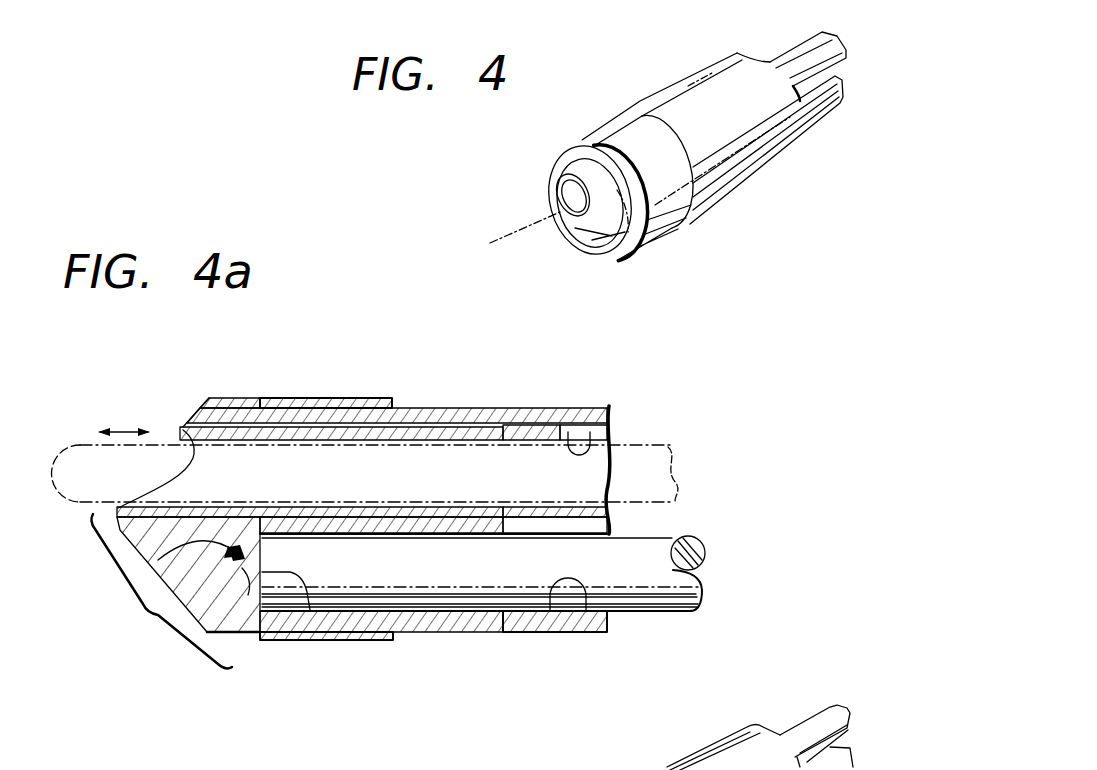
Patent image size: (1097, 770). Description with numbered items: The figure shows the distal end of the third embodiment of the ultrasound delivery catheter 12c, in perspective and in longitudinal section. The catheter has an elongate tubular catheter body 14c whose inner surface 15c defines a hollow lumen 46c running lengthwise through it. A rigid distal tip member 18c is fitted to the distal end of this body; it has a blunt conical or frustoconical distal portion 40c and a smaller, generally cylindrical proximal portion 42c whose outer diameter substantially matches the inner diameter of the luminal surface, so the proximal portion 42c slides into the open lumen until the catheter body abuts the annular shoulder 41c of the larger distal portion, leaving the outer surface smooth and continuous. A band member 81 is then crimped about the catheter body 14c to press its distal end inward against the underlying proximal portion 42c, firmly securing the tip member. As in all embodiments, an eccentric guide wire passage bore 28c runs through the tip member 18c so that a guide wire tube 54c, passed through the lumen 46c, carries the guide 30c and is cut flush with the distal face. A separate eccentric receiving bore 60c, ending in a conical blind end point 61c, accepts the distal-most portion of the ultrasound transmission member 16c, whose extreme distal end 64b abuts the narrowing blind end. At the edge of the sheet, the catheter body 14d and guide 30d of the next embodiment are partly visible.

In FIG. 4, the catheter 12c is at (715, 222).
In FIG. 4, the elongate tubular catheter body 14c is at (699, 100).
In FIG. 4a, the elongate tubular catheter body 14c is at (402, 408).
In FIG. 4, the band member 81 is at (631, 140).
In FIG. 4a, the band member 81 is at (349, 397).
In FIG. 4, the distal tip member 18c is at (558, 172).
In FIG. 4a, the distal tip member 18c is at (233, 397).
In FIG. 4, the front end face 28c is at (540, 215).
In FIG. 4a, the front end face 28c is at (165, 434).
In FIG. 4, the central bore 54c is at (562, 225).
In FIG. 4a, the central bore 54c is at (244, 508).
In FIG. 4, the optical fiber cable 30c is at (803, 57).
In FIG. 4a, the optical fiber cable 30c is at (73, 463).
In FIG. 4, the strain relief cable 16c is at (817, 97).
In FIG. 4a, the strain relief cable 16c is at (706, 553).
In FIG. 4a, the rotation direction arrow 41c is at (250, 417).
In FIG. 4a, the proximal portion 42c is at (444, 420).
In FIG. 4a, the inner surface 15c is at (593, 426).
In FIG. 4a, the lumen 46c is at (613, 427).
In FIG. 4a, the flared entrance surface 61c is at (200, 538).
In FIG. 4a, the distal portion 40c is at (146, 614).
In FIG. 4a, the hook 60c is at (248, 595).
In FIG. 4a, the bracket 64b is at (310, 610).
In FIG. 4a, the connector body (alternate embodiment) 14d is at (702, 762).
In FIG. 4a, the cable (alternate embodiment) 30d is at (810, 727).